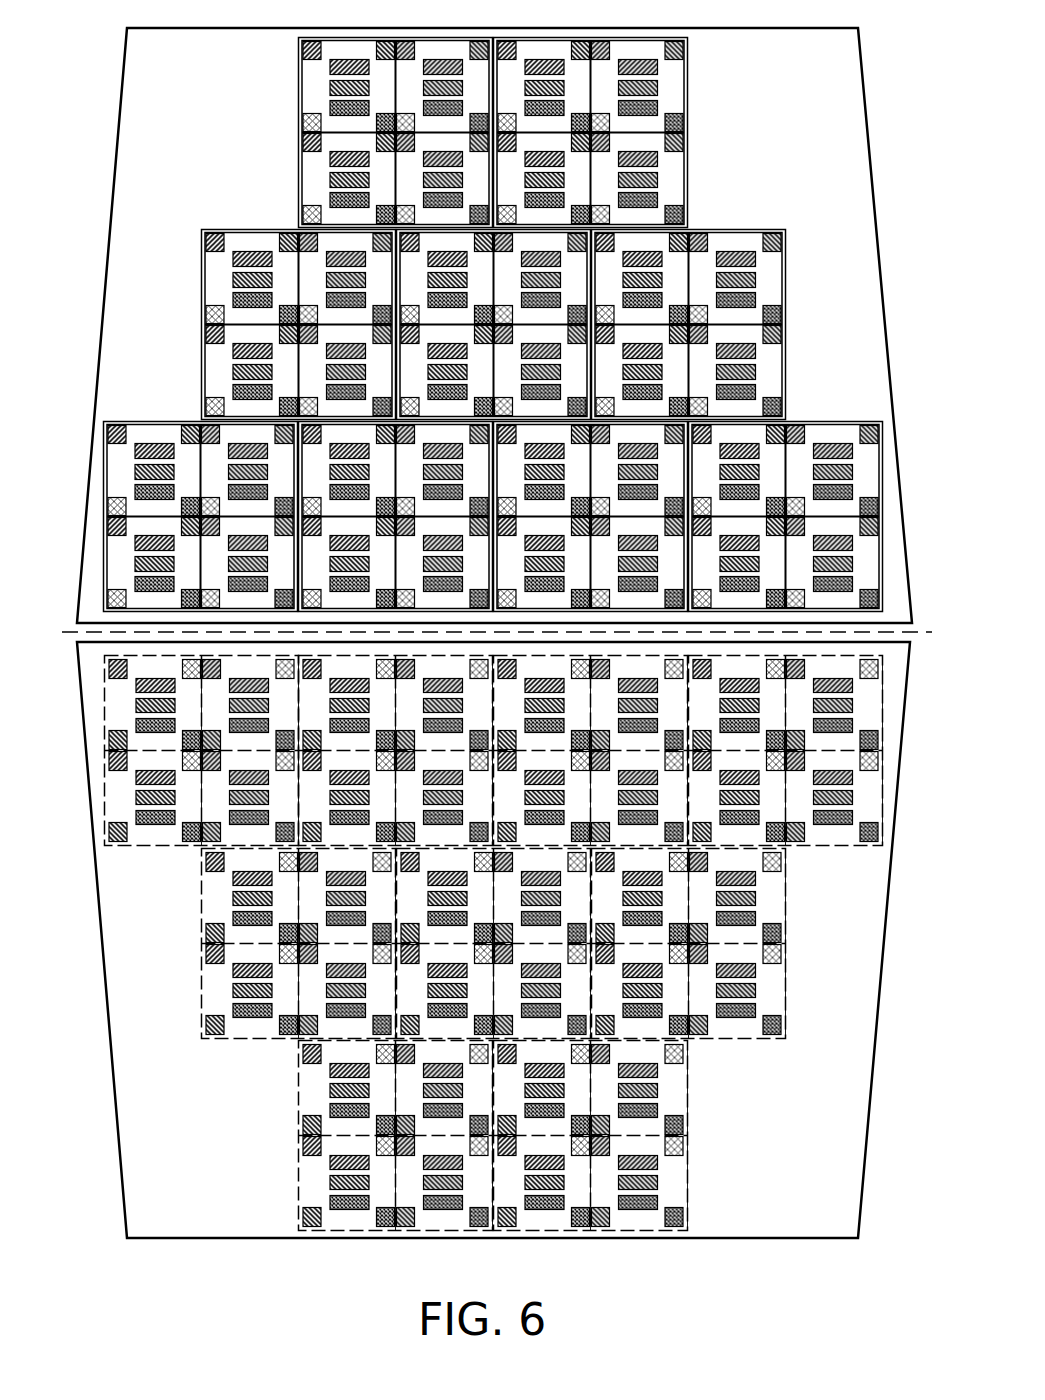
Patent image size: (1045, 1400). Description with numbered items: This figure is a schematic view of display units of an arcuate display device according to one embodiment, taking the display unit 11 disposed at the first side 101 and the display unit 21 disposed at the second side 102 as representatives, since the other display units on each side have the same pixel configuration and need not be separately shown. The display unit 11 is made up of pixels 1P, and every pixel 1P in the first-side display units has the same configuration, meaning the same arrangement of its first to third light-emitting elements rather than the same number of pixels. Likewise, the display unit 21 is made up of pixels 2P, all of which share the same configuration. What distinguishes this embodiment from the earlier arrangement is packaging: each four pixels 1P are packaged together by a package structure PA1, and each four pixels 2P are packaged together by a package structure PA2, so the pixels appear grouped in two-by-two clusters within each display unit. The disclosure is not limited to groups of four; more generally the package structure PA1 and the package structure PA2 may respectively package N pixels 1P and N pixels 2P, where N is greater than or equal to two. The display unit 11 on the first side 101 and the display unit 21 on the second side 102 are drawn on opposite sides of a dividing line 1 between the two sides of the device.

The first side 101 is at (498, 325).
The second side 102 is at (494, 940).
The display unit 11 is at (108, 228).
The display unit 21 is at (118, 1150).
The package structure PA1 is at (457, 325).
The package structure PA2 is at (456, 943).
The pixel 1P is at (105, 470).
The pixel 2P is at (105, 795).
The splicing line 1 is at (915, 633).